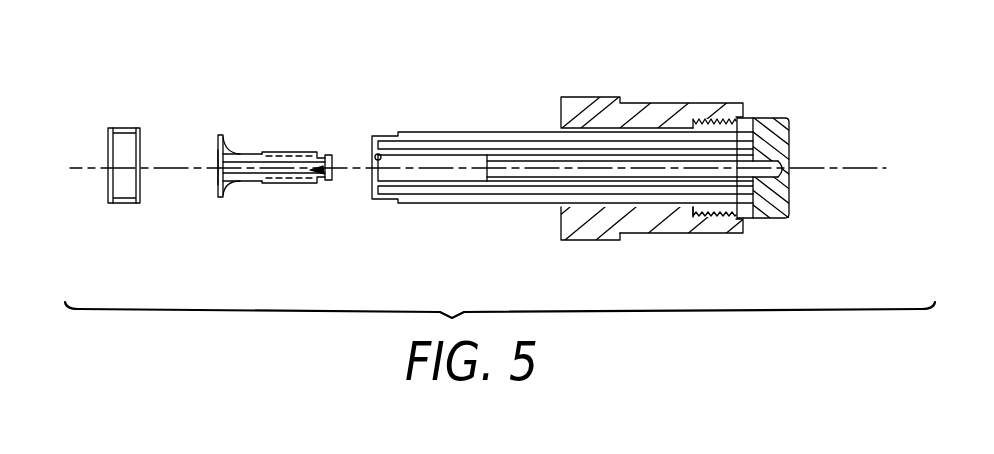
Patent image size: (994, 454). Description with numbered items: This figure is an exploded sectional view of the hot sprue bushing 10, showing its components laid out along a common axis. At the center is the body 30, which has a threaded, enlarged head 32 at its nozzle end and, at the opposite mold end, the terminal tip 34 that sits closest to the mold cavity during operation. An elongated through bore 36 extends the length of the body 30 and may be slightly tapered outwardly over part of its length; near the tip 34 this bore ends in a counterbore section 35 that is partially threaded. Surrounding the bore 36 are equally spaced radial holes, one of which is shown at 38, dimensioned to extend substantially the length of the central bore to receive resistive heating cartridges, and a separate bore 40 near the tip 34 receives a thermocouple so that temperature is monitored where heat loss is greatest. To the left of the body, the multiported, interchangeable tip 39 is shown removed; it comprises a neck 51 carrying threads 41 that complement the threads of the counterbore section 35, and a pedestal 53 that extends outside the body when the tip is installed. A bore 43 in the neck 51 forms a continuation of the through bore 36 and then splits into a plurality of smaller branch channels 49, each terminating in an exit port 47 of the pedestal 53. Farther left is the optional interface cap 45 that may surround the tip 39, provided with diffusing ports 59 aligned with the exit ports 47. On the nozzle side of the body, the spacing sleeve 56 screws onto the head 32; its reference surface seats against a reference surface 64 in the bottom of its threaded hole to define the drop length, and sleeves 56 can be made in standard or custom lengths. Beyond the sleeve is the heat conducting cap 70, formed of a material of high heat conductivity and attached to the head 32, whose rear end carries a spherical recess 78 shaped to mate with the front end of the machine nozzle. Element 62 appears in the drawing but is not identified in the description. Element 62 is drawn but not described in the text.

The hot sprue bushing 10 is at (585, 50).
The body 30 is at (491, 205).
The threaded, enlarged head 32 is at (722, 128).
The tip 34 is at (383, 212).
The counterbore section 35 is at (376, 156).
The through bore 36 is at (523, 163).
The hole 38 is at (419, 140).
The multiported, interchangeable tip 39 is at (284, 140).
The bore 40 is at (434, 196).
The threads 41 is at (289, 184).
The bore 43 is at (322, 180).
The interface cap 45 is at (127, 128).
The exit port 47 is at (221, 135).
The branch channels 49 is at (217, 154).
The neck 51 is at (247, 183).
The pedestal 53 is at (229, 139).
The spacing sleeve 56 is at (667, 110).
The diffusing ports 59 is at (108, 130).
The nut flange 62 is at (560, 222).
The reference surface 64 is at (681, 226).
The heat conducting cap 70 is at (763, 119).
The spherical recess 78 is at (790, 156).